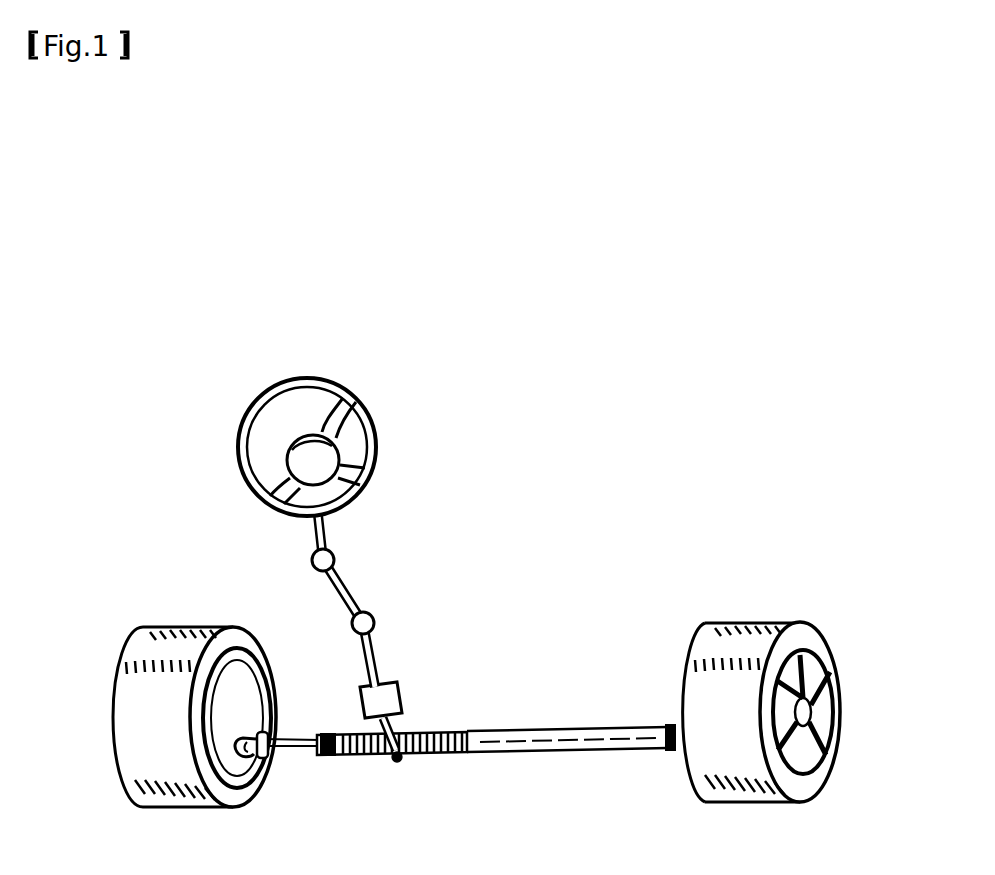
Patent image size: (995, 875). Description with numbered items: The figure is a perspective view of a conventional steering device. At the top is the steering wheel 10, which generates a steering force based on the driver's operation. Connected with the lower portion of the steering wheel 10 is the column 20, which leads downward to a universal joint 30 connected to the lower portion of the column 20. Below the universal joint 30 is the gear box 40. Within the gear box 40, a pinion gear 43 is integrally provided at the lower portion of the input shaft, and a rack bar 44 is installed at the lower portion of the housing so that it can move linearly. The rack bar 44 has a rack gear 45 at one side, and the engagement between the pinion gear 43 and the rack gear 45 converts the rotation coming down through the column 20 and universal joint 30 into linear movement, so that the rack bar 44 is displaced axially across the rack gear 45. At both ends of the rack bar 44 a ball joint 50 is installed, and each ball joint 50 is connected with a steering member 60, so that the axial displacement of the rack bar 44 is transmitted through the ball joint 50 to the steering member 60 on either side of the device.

The steering wheel 10 is at (352, 393).
The column 20 is at (330, 527).
The universal joint 30 is at (388, 612).
The gear box 40 is at (420, 760).
The pinion gear 43 is at (400, 720).
The rack bar 44 is at (571, 715).
The rack gear 45 is at (455, 735).
The ball joint 50 is at (270, 770).
The steering member 60 is at (795, 645).